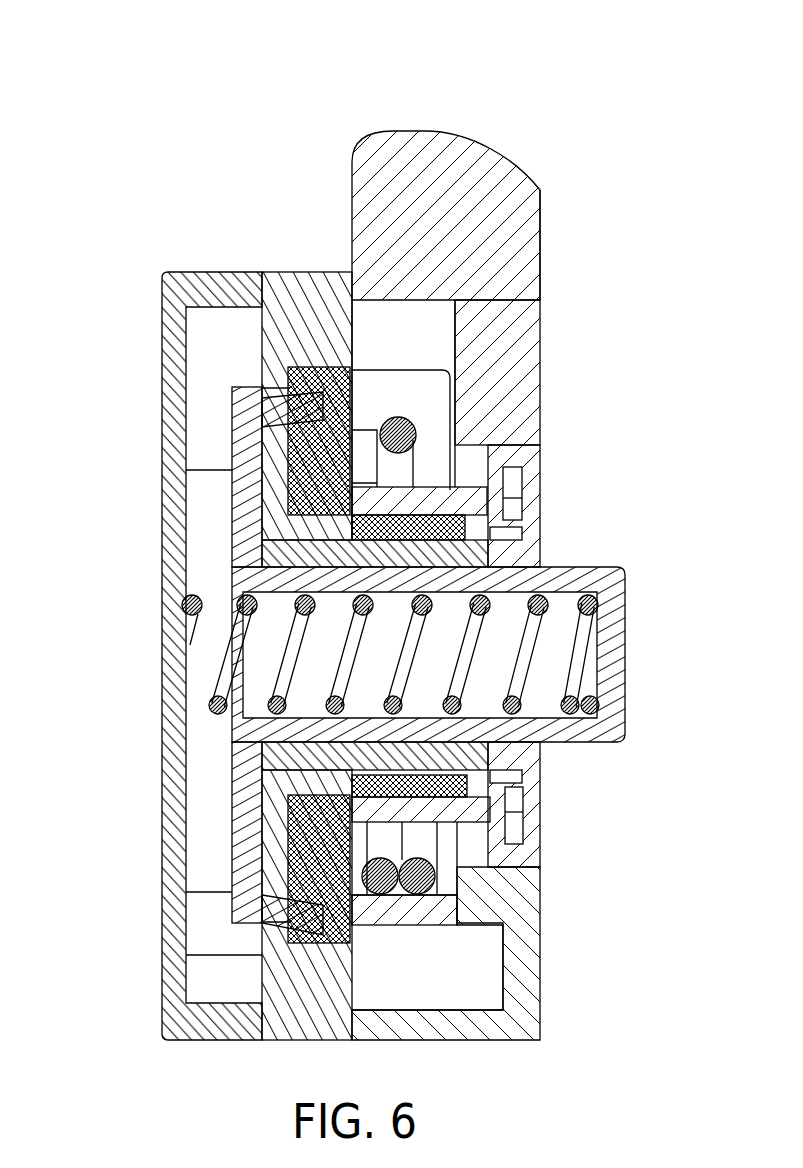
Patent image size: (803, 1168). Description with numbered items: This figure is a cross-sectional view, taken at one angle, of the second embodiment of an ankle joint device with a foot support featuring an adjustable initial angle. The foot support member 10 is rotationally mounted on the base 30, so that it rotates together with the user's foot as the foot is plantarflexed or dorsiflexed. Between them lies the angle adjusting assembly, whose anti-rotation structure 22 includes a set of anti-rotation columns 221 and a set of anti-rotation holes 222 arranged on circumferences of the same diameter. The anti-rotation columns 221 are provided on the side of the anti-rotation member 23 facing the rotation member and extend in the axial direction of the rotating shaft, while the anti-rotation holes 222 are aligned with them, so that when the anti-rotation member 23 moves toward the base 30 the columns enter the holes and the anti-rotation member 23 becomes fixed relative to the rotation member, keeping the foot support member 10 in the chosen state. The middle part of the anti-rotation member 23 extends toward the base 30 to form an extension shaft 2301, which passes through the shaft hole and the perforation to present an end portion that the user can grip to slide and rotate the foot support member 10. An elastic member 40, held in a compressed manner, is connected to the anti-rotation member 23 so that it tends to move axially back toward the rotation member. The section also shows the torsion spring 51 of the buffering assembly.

The foot support member 10 is at (162, 363).
The anti-rotation structure 22 is at (213, 50).
The anti-rotation columns 221 is at (259, 305).
The anti-rotation holes 222 is at (320, 382).
The anti-rotation member 23 is at (232, 388).
The extension shaft 2301 is at (542, 573).
The base 30 is at (540, 323).
The elastic member 40 is at (190, 600).
The torsion spring 51 is at (404, 430).